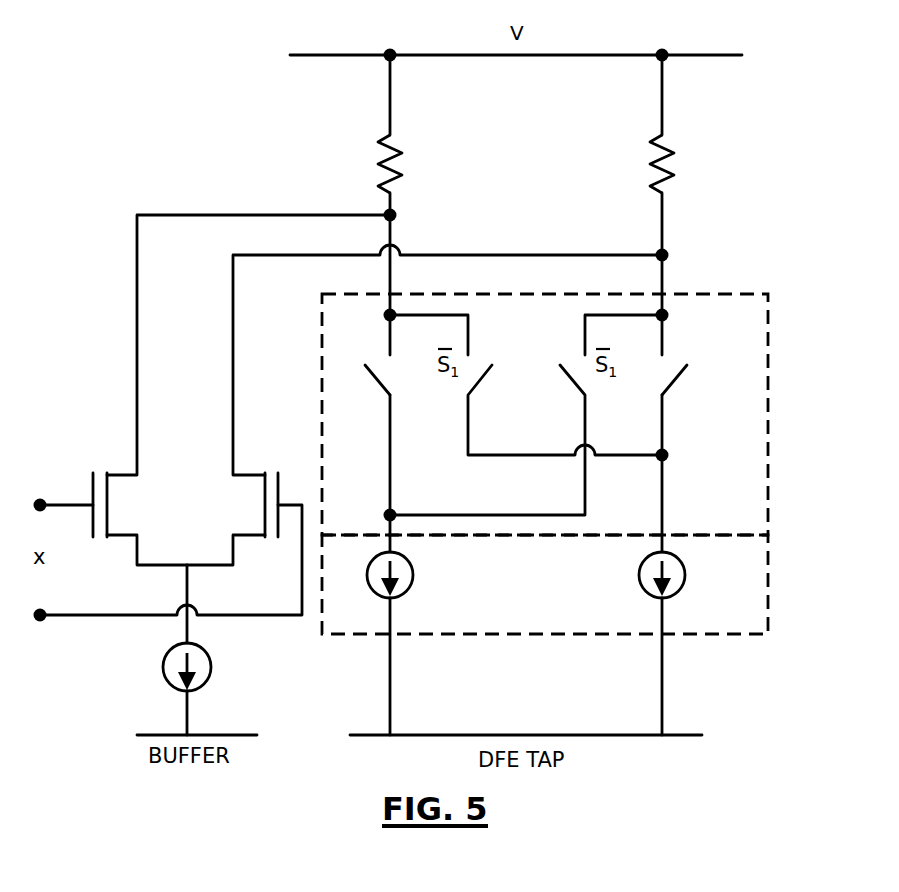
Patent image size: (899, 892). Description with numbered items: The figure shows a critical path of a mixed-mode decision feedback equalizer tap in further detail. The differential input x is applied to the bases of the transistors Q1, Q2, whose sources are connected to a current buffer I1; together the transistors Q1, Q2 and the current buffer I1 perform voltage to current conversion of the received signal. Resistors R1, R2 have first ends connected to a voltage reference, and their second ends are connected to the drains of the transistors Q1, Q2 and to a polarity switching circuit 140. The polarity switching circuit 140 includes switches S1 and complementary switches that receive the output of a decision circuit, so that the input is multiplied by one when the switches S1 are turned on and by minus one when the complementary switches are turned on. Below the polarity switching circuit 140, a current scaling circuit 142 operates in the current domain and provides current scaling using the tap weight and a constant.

The polarity switching circuit 140 is at (768, 355).
The current scaling circuit 142 is at (768, 592).
The resistor R1 is at (405, 164).
The resistor R2 is at (644, 164).
The transistor Q1 is at (115, 505).
The transistor Q2 is at (251, 505).
The current buffer I1 is at (205, 667).
The switch S1 is at (532, 386).